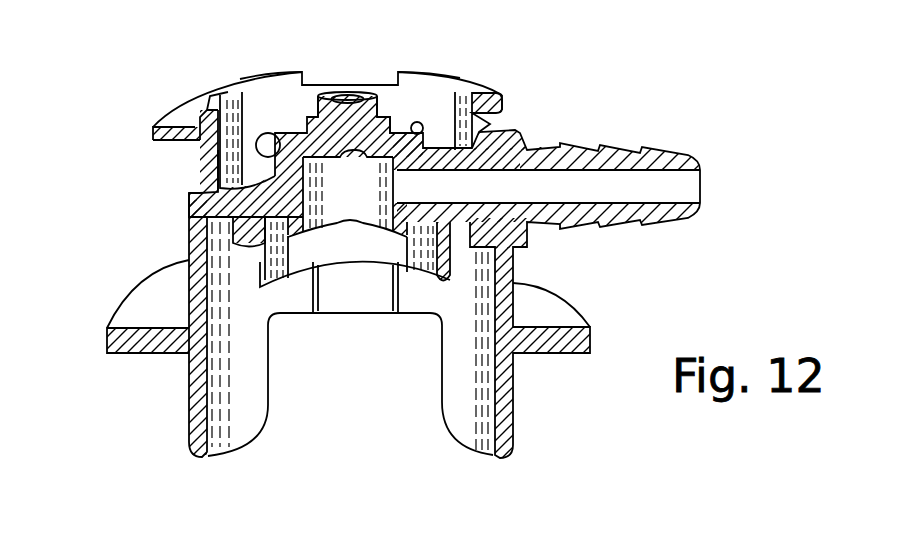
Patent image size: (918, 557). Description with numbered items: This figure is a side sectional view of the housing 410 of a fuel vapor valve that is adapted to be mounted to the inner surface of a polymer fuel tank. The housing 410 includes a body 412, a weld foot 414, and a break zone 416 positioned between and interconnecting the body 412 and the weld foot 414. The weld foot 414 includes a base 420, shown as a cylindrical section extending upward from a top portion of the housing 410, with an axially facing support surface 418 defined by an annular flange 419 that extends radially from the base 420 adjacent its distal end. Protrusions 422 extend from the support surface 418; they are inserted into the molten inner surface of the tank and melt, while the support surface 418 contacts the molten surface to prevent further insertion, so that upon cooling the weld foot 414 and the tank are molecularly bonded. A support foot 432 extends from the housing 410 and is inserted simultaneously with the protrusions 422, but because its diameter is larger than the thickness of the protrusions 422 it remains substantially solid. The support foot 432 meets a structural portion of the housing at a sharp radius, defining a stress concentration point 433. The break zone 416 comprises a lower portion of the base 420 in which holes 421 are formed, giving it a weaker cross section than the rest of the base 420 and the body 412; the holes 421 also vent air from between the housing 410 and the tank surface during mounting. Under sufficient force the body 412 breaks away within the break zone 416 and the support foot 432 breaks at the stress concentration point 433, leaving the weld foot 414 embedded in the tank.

The housing 410 is at (317, 465).
The body 412 is at (185, 260).
The weld foot 414 is at (200, 173).
The break zone 416 is at (198, 181).
The support surface 418 is at (187, 113).
The annular flange 419 is at (198, 141).
The base 420 is at (152, 129).
The holes 421 is at (267, 133).
The protrusions 422 is at (270, 72).
The support foot 432 is at (362, 92).
The stress concentration point 433 is at (390, 110).